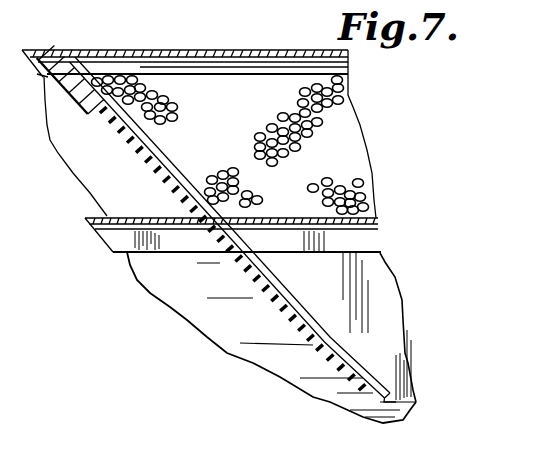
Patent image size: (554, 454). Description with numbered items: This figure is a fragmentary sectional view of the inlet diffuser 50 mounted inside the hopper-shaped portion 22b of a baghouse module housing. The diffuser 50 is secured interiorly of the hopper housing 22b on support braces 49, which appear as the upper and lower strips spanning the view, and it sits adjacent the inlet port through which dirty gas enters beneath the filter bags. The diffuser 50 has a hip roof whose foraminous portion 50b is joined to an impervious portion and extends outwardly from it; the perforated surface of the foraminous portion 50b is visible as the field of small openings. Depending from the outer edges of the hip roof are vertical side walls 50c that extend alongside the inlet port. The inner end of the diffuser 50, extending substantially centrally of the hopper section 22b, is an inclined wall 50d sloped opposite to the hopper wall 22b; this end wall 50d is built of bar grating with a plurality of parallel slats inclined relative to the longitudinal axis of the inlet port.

The support braces 49 is at (197, 68).
The diffuser 50 is at (60, 190).
The foraminous portion 50b is at (248, 88).
The vertical side walls 50c is at (384, 270).
The inclined wall 50d is at (183, 191).
The hopper-shaped portion 22b is at (177, 290).